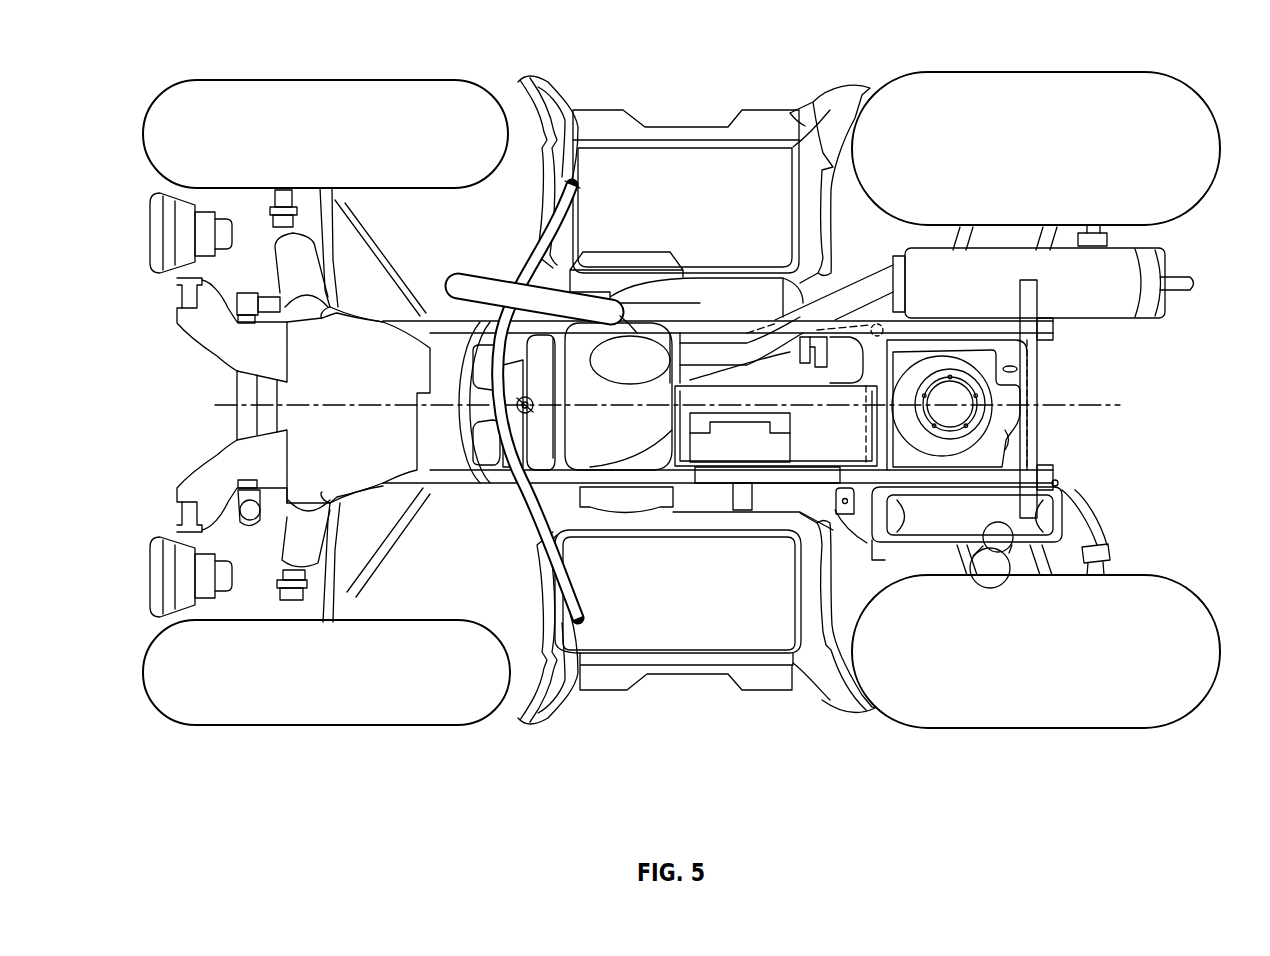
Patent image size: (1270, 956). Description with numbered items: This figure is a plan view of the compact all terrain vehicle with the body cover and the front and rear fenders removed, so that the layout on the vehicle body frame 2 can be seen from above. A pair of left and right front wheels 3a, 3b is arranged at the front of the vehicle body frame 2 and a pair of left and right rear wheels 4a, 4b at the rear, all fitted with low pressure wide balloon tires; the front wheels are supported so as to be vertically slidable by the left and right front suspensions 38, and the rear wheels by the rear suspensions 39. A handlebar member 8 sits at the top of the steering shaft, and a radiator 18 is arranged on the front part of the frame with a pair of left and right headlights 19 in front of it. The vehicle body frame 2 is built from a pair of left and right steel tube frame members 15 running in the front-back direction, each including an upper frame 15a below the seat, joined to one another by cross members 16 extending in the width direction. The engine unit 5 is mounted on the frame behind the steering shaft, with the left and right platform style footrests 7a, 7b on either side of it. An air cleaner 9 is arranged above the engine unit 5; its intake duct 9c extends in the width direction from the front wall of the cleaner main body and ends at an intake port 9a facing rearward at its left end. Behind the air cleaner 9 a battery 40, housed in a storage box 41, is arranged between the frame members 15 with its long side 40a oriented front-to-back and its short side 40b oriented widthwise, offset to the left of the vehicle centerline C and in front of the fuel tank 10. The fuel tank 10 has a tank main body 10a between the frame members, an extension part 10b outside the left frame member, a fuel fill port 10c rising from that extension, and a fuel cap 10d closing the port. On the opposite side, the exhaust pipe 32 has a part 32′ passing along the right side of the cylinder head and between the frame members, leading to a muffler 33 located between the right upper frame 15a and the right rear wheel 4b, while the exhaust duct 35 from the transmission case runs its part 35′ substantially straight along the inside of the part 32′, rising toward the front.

The vehicle body frame 2 is at (481, 316).
The left front wheel 3a is at (390, 725).
The right front wheel 3b is at (385, 80).
The left rear wheel 4a is at (1105, 728).
The right rear wheel 4b is at (1105, 72).
The engine unit 5 is at (686, 258).
The left footrest 7a is at (698, 642).
The right footrest 7b is at (697, 155).
The handlebar member 8 is at (548, 207).
The air cleaner 9 is at (566, 464).
The intake port 9a is at (551, 487).
The intake duct 9c is at (535, 432).
The fuel tank 10 is at (930, 556).
The tank main body 10a is at (1008, 437).
The extension part 10b is at (887, 553).
The fuel fill port 10c is at (1028, 578).
The fuel cap 10d is at (995, 590).
The frame member 15 is at (428, 314).
The upper frame 15a is at (450, 318).
The cross member 16 is at (1035, 350).
The radiator 18 is at (238, 406).
The headlight 19 is at (205, 193).
The exhaust pipe 32 is at (858, 272).
The part of exhaust pipe 32′ is at (707, 345).
The muffler 33 is at (1118, 322).
The exhaust duct 35 is at (476, 268).
The part of exhaust duct 35′ is at (745, 360).
The front suspension 38 is at (365, 228).
The rear suspension 39 is at (1125, 234).
The battery 40 is at (795, 440).
The long side 40a is at (737, 490).
The short side 40b is at (790, 423).
The storage box 41 is at (877, 458).
The centerline C is at (1105, 405).